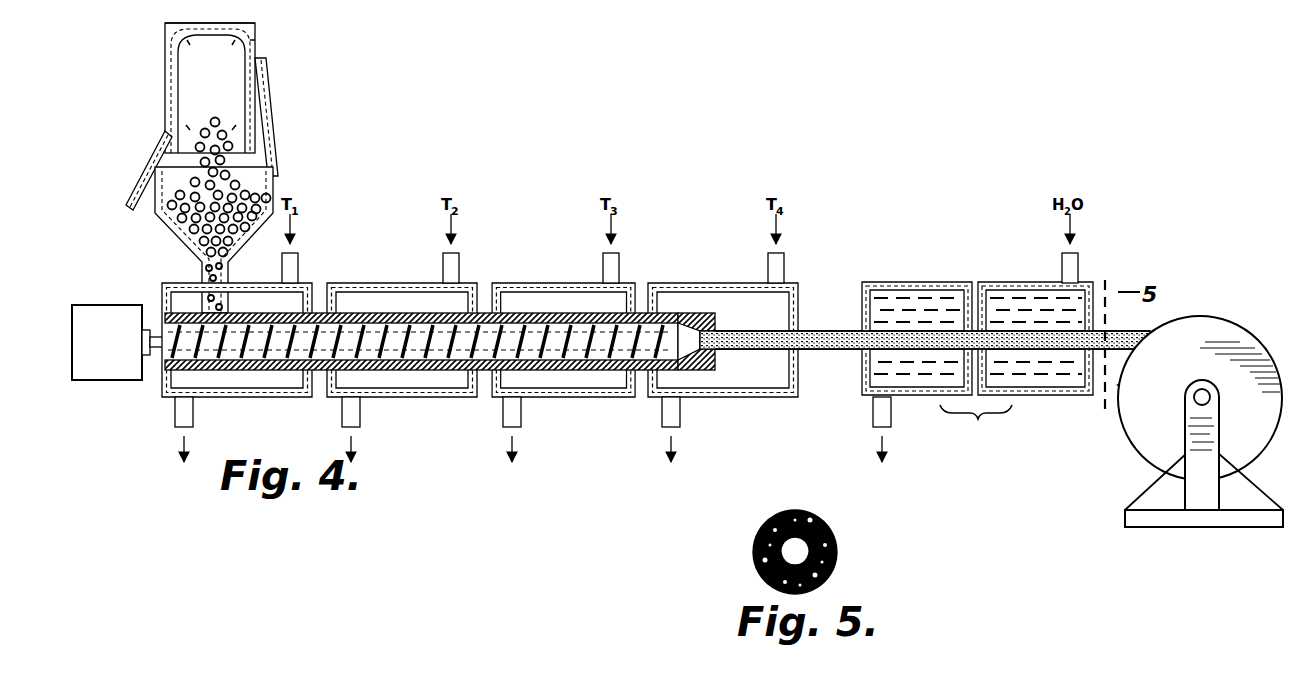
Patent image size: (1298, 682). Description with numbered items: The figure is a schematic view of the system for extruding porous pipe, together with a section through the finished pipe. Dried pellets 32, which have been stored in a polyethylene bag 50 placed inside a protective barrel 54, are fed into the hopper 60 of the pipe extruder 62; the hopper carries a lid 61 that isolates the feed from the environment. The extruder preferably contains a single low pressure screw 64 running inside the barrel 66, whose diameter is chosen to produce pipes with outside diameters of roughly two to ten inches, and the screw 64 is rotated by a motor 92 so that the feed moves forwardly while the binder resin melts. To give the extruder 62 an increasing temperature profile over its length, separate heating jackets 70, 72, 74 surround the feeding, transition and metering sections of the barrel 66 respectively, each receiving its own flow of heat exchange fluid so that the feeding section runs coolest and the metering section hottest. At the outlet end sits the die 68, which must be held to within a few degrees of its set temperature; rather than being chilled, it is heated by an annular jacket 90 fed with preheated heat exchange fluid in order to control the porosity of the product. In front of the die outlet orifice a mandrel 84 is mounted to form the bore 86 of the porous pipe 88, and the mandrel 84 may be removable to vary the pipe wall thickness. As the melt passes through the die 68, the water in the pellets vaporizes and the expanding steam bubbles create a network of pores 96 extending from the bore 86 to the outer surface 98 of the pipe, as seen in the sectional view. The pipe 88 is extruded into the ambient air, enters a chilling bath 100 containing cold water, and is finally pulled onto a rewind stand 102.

In FIG. 4, the pellets 32 is at (232, 166).
In FIG. 4, the polyethylene bag 50 is at (190, 70).
In FIG. 4, the barrel 54 is at (250, 36).
In FIG. 4, the hopper 60 is at (172, 232).
In FIG. 4, the lid 61 is at (268, 106).
In FIG. 4, the pipe extruder 62 is at (348, 258).
In FIG. 4, the screw 64 is at (455, 372).
In FIG. 4, the barrel 66 is at (484, 283).
In FIG. 4, the die 68 is at (682, 313).
In FIG. 4, the heating jacket 70 is at (276, 283).
In FIG. 4, the heating jacket 72 is at (422, 283).
In FIG. 4, the heating jacket 74 is at (588, 283).
In FIG. 4, the mandrel 84 is at (808, 350).
In FIG. 4, the bore 86 is at (853, 334).
In FIG. 5, the bore 86 is at (833, 556).
In FIG. 4, the porous pipe 88 is at (840, 324).
In FIG. 5, the porous pipe 88 is at (745, 558).
In FIG. 4, the annular jacket 90 is at (757, 283).
In FIG. 4, the motor 92 is at (128, 305).
In FIG. 5, the pores 96 is at (828, 522).
In FIG. 5, the surface 98 is at (762, 524).
In FIG. 4, the chilling bath 100 is at (948, 282).
In FIG. 4, the rewind stand 102 is at (1135, 420).